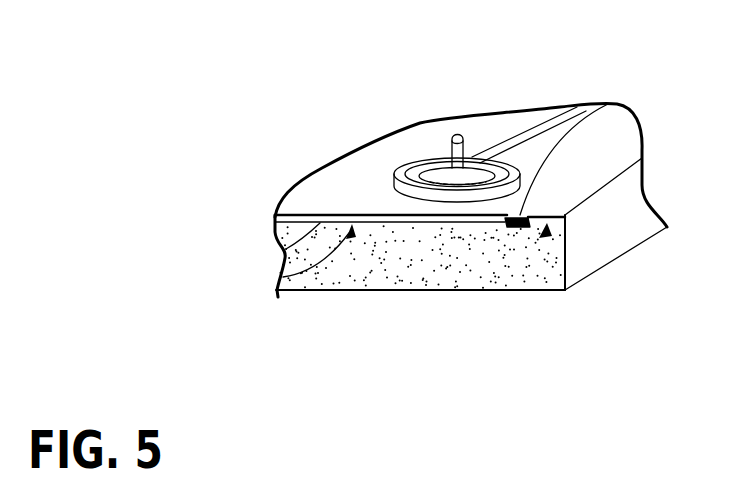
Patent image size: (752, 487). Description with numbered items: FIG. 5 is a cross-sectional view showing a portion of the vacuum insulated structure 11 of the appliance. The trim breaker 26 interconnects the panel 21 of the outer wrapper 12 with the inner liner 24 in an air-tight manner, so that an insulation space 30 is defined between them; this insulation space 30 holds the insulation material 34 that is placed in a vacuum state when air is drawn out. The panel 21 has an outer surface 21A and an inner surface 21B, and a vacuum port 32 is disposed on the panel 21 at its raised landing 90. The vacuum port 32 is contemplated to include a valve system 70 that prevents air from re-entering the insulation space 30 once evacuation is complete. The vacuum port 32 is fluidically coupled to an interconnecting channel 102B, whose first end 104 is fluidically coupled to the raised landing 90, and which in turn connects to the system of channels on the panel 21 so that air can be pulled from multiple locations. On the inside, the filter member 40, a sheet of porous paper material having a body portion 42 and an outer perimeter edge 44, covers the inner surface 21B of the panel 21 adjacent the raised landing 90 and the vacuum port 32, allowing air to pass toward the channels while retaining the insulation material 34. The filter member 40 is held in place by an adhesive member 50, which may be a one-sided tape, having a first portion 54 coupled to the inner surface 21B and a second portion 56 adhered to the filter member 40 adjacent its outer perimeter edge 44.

The vacuum insulated structure 11 is at (357, 80).
The outer wrapper 12 is at (360, 171).
The panel 21 is at (614, 163).
The outer surface 21A is at (317, 206).
The inner surface 21B is at (568, 226).
The inner liner 24 is at (376, 291).
The trim breaker 26 is at (622, 224).
The insulation space 30 is at (407, 244).
The vacuum port 32 is at (420, 154).
The insulation material 34 is at (348, 237).
The filter member 40 is at (280, 281).
The body portion 42 is at (281, 246).
The outer perimeter edge 44 is at (608, 105).
The adhesive member 50 is at (553, 225).
The first portion 54 is at (565, 222).
The second portion 56 is at (545, 232).
The valve system 70 is at (450, 136).
The raised landing 90 is at (400, 168).
The interconnecting channel 102B is at (528, 126).
The first end 104 is at (492, 154).